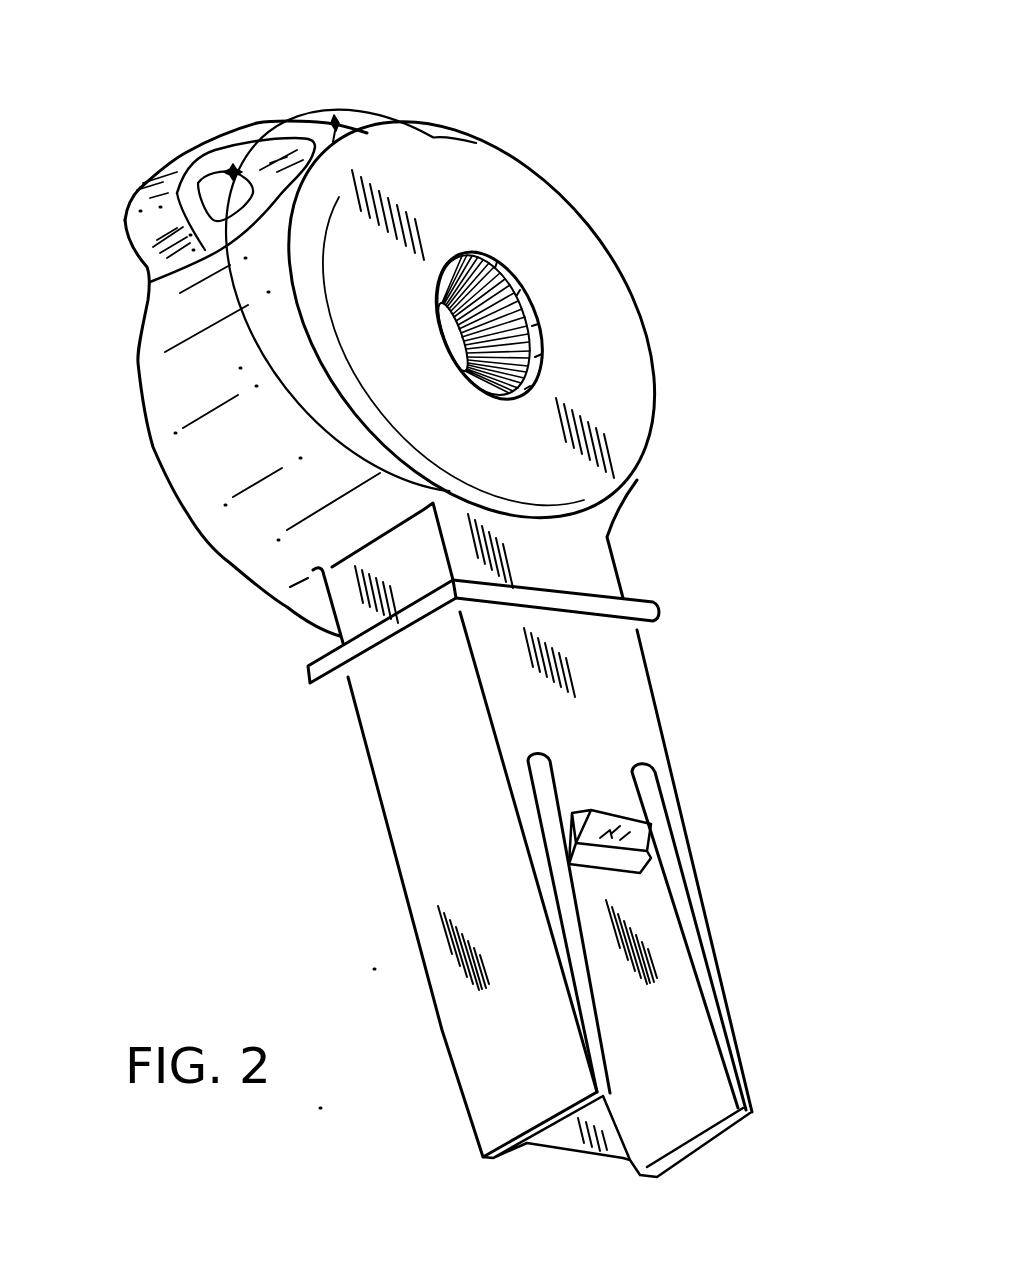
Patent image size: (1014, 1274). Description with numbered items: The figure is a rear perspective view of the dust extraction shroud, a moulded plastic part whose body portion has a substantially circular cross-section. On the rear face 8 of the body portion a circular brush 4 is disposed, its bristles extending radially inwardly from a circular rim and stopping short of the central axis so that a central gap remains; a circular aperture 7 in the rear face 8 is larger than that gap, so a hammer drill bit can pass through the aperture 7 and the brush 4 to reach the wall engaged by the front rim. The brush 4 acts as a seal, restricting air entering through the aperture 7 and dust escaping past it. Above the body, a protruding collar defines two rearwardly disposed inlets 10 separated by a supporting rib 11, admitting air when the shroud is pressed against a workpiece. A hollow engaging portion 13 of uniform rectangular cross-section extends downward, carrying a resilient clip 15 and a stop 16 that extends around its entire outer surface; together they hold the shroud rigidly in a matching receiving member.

The circular brush 4 is at (477, 252).
The circular aperture 7 is at (518, 308).
The rear face 8 is at (608, 372).
The rearwardly disposed inlets 10 is at (233, 172).
The supporting rib 11 is at (150, 282).
The engaging portion 13 is at (393, 735).
The resilient clip 15 is at (627, 817).
The stop 16 is at (622, 607).